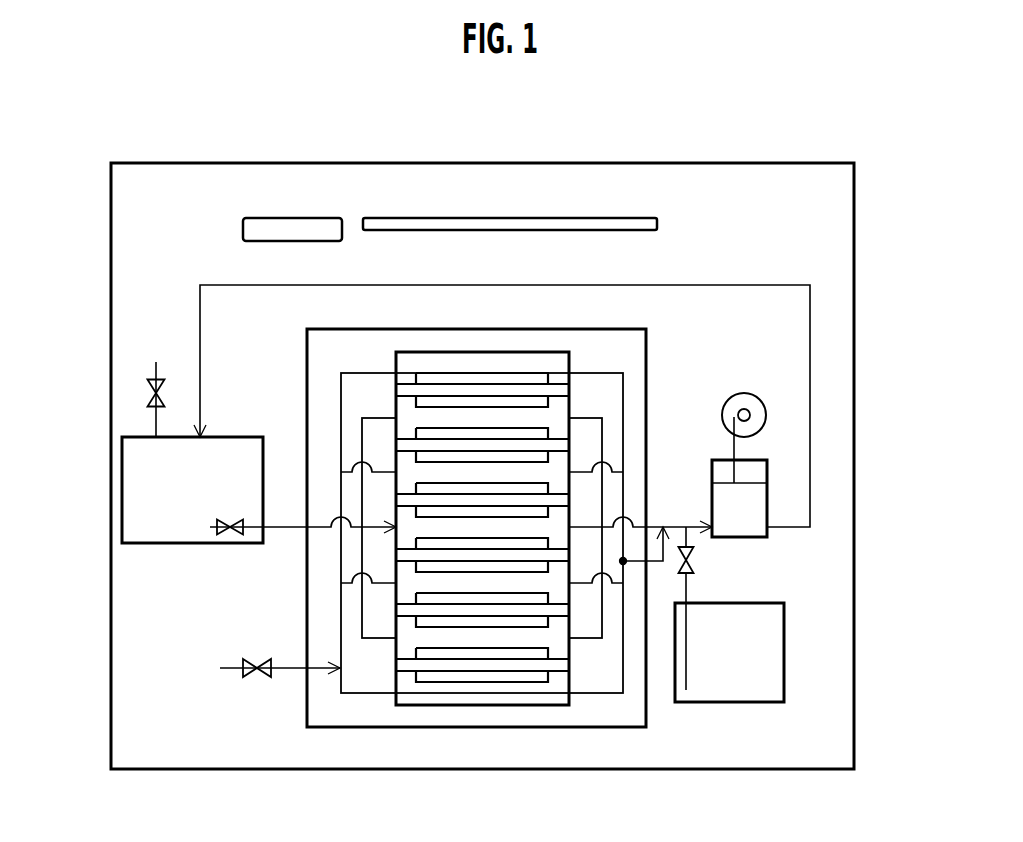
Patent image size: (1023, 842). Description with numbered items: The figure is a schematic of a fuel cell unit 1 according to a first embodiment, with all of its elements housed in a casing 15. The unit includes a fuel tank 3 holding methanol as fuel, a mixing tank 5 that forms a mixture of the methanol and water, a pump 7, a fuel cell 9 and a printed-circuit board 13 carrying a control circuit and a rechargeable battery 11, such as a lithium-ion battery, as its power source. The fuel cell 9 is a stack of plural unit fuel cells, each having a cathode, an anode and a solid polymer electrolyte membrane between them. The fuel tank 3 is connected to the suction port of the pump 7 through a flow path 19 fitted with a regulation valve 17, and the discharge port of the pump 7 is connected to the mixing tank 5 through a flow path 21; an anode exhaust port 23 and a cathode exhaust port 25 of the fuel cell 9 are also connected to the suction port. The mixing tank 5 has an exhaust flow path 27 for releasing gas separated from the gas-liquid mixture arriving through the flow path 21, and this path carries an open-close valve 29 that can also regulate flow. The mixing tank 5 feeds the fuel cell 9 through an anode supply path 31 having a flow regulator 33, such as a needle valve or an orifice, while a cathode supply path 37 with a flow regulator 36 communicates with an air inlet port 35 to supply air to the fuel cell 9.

The fuel cell unit 1 is at (922, 252).
The fuel tank 3 is at (784, 620).
The mixing tank 5 is at (122, 474).
The pump 7 is at (758, 493).
The fuel cell 9 is at (503, 705).
The rechargeable battery 11 is at (320, 224).
The printed-circuit board 13 is at (568, 222).
The casing 15 is at (720, 162).
The regulation valve 17 is at (693, 553).
The flow path 19 is at (686, 614).
The flow path 21 is at (810, 330).
The anode exhaust port 23 is at (602, 442).
The cathode exhaust port 25 is at (623, 393).
The exhaust flow path 27 is at (156, 423).
The open-close valve 29 is at (148, 393).
The anode supply path 31 is at (285, 527).
The flow regulator 33 is at (230, 521).
The air inlet port 35 is at (230, 669).
The flow regulator 36 is at (260, 678).
The cathode supply path 37 is at (339, 607).